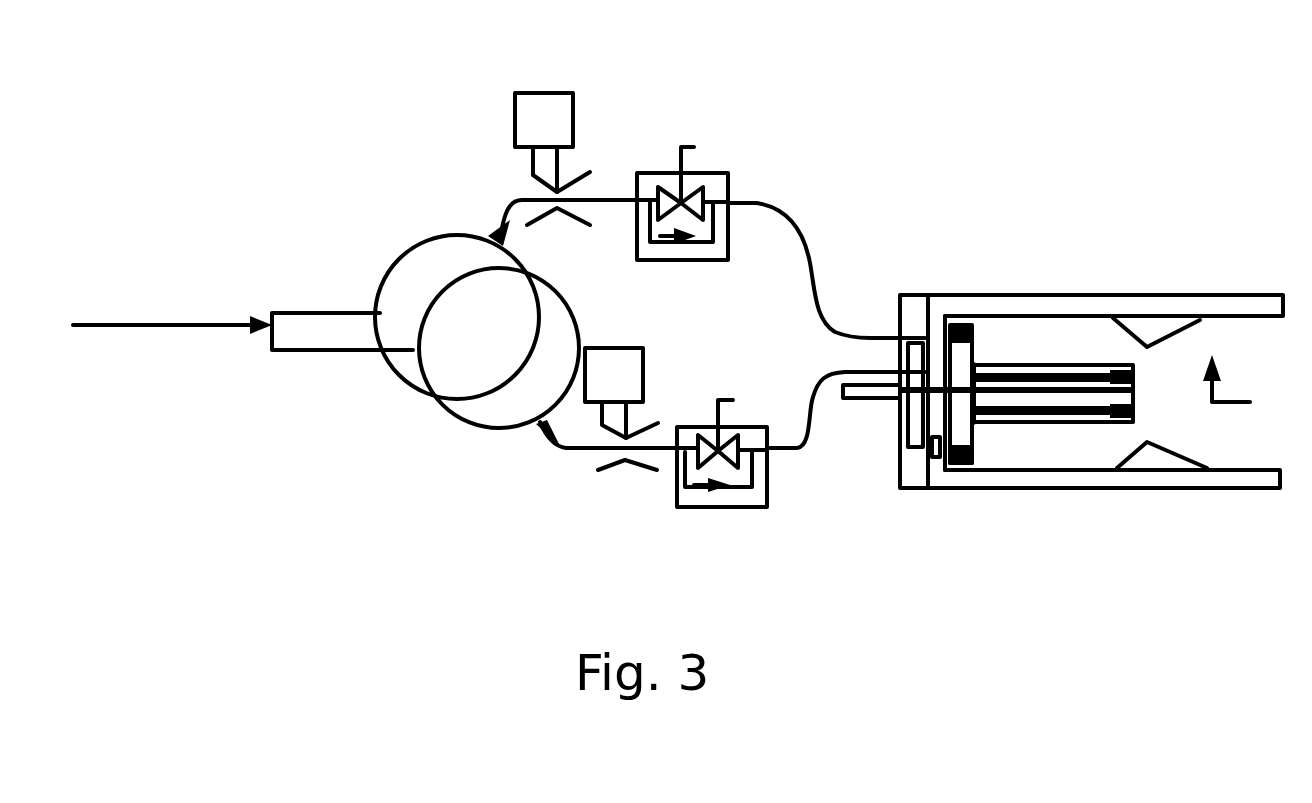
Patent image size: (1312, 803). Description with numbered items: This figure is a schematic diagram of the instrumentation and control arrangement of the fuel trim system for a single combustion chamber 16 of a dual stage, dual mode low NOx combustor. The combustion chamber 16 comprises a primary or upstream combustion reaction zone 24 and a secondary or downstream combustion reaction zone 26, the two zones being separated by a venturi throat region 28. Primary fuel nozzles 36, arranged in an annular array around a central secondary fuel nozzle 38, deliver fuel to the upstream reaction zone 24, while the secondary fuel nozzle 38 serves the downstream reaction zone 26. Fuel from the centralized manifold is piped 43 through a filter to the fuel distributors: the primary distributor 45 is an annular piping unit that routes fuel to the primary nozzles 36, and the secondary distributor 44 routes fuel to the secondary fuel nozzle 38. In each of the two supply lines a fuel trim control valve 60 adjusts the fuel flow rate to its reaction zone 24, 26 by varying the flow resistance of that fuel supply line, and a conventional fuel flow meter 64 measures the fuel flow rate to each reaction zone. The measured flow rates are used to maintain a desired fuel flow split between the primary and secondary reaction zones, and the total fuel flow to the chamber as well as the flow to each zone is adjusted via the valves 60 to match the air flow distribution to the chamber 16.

The combustion chamber 16 is at (1032, 280).
The primary combustion reaction zone 24 is at (1005, 455).
The secondary combustion reaction zone 26 is at (1249, 390).
The venturi throat region 28 is at (1147, 345).
The primary fuel nozzles 36 is at (960, 337).
The secondary fuel nozzle 38 is at (1133, 370).
The fuel piping 43 is at (155, 327).
The secondary distributor 44 is at (468, 422).
The primary distributor 45 is at (395, 256).
The fuel trim control valve 60 is at (733, 190).
The fuel flow meter 64 is at (553, 93).